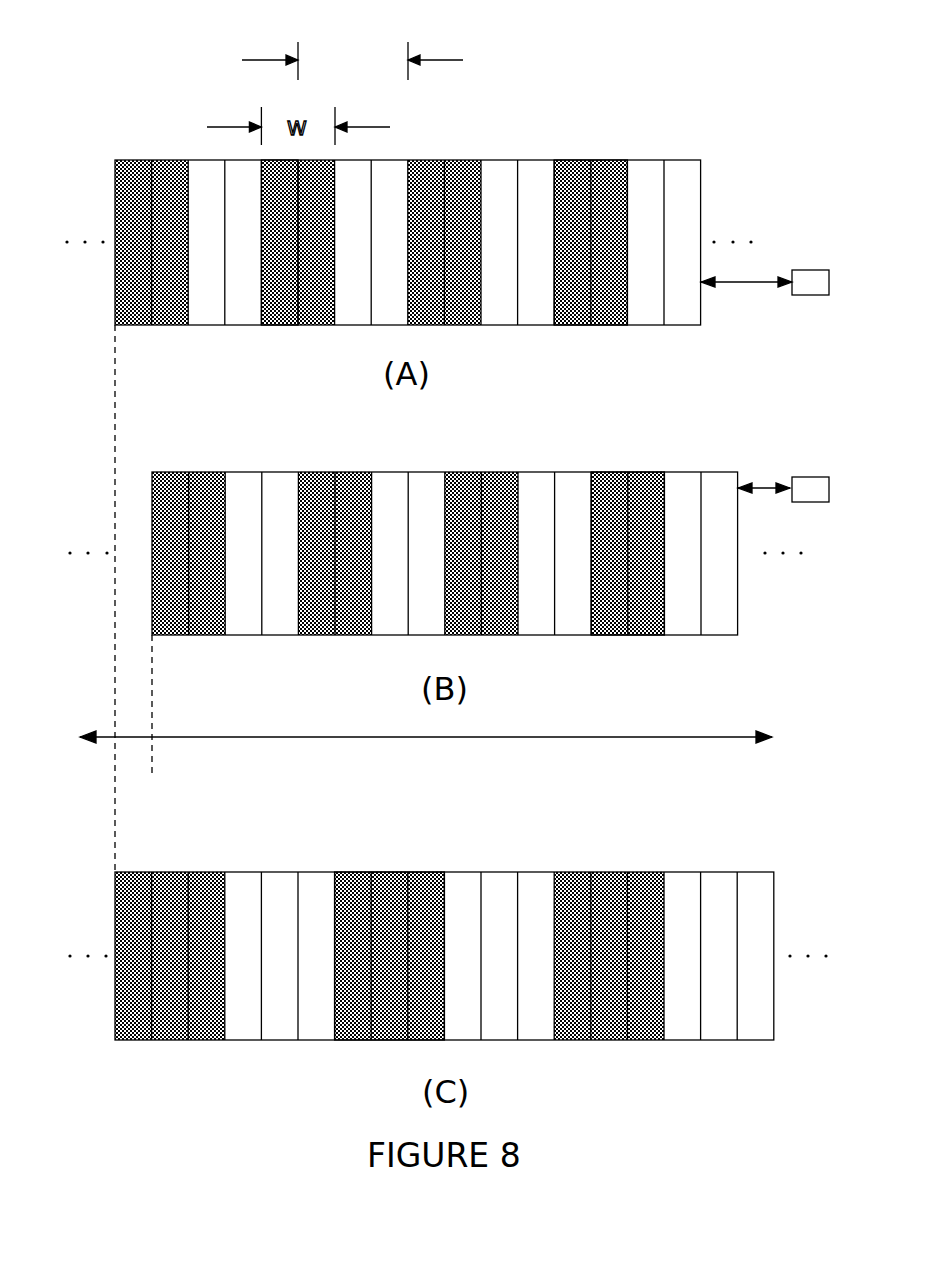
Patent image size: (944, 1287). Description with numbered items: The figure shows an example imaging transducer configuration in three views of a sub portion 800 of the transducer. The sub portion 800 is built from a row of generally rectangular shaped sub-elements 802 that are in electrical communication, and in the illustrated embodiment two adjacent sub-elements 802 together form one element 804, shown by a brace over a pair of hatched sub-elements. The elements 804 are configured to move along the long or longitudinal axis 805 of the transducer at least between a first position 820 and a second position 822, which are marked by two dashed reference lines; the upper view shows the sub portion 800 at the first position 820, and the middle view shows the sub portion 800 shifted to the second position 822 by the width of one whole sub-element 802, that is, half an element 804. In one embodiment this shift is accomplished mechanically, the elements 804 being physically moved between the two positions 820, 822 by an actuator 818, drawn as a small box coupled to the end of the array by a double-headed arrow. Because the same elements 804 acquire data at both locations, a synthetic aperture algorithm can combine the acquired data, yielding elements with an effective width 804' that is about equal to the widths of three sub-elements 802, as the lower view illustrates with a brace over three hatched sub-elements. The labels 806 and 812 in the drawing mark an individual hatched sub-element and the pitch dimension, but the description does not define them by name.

The sub portion 800 is at (165, 117).
The sub-element 802 is at (683, 160).
The element 804 is at (637, 363).
The effective width 804' is at (412, 919).
The longitudinal axis 805 is at (627, 737).
The active pixel element 806 is at (273, 102).
The pixel pitch dimension 812 is at (367, 30).
The actuator 818 is at (810, 295).
The first position 820 is at (115, 772).
The second position 822 is at (152, 772).